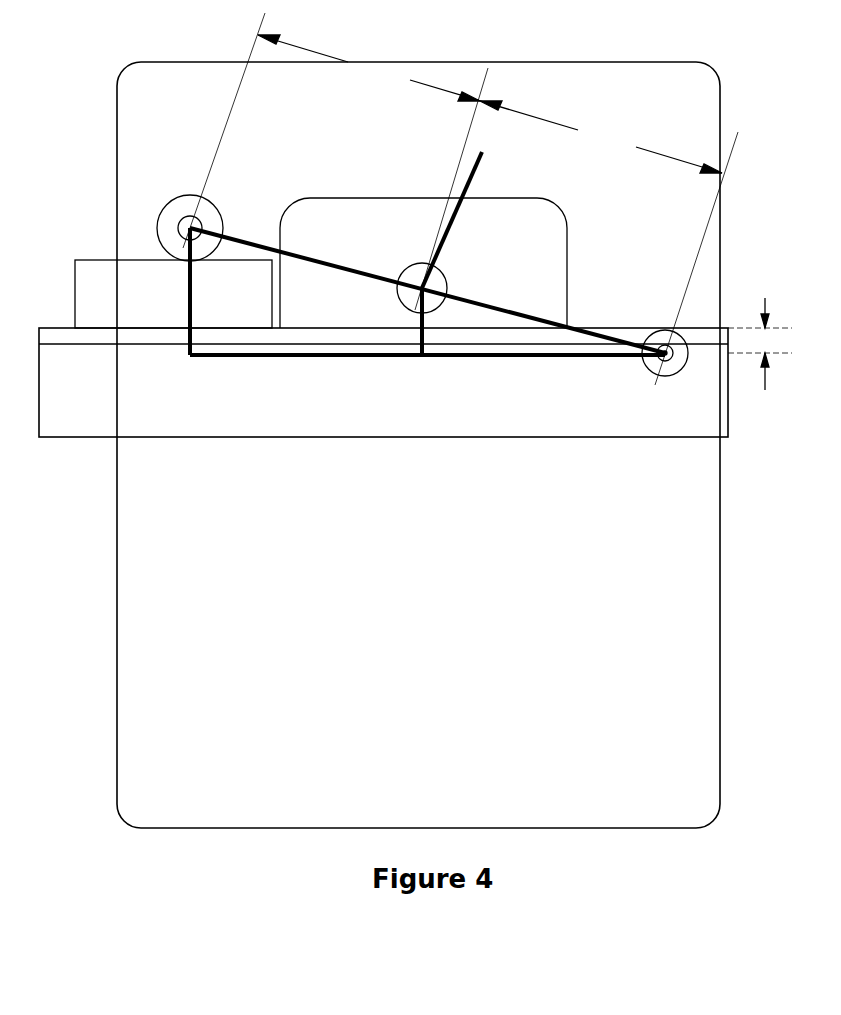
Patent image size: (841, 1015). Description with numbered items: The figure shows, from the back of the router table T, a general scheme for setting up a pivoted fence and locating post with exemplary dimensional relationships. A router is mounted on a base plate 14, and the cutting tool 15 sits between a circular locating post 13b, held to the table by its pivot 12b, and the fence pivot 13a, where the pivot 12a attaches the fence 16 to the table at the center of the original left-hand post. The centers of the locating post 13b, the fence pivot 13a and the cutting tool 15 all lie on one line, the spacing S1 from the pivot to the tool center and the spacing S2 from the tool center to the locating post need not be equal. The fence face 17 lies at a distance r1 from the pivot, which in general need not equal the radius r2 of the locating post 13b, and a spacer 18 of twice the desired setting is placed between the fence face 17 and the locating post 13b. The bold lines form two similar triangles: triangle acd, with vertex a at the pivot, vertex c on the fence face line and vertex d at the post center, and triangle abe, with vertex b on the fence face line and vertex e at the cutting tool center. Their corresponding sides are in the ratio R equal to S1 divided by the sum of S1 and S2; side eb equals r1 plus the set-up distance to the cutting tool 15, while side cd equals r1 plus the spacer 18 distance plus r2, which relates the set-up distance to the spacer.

The router table T is at (117, 735).
The fence 16 is at (318, 437).
The fence face 17 is at (62, 328).
The spacer 18 is at (91, 260).
The base plate 14 is at (423, 231).
The cutting tool 15 is at (482, 152).
The triangle vertex e is at (422, 288).
The locating post 13b is at (175, 200).
The pivot 12b is at (202, 215).
The radius of the locating post r2 is at (196, 226).
The fence pivot 13a is at (648, 371).
The pivot 12a is at (672, 358).
The triangle vertex d is at (190, 228).
The triangle vertex c is at (424, 379).
The triangle vertex b is at (421, 346).
The triangle vertex a is at (665, 353).
The spacing S2 is at (380, 161).
The spacing S1 is at (609, 243).
The distance from fence face to pivot r1 is at (760, 344).